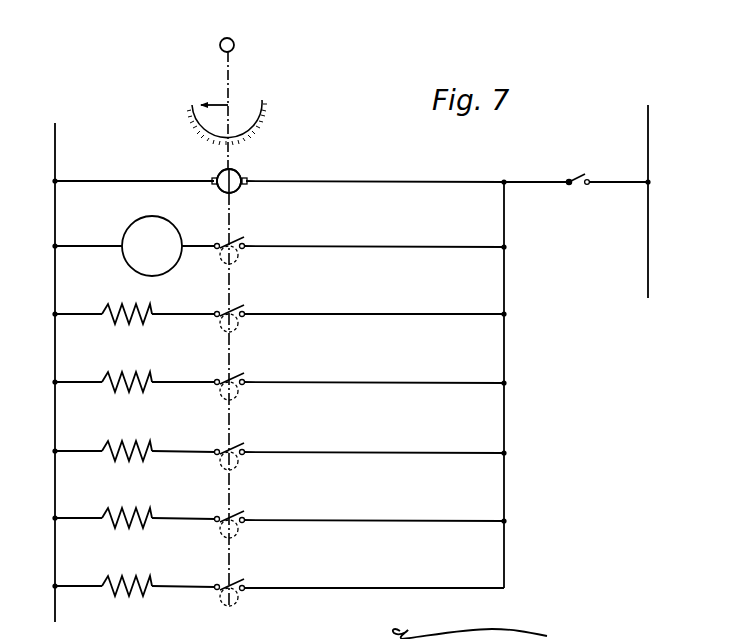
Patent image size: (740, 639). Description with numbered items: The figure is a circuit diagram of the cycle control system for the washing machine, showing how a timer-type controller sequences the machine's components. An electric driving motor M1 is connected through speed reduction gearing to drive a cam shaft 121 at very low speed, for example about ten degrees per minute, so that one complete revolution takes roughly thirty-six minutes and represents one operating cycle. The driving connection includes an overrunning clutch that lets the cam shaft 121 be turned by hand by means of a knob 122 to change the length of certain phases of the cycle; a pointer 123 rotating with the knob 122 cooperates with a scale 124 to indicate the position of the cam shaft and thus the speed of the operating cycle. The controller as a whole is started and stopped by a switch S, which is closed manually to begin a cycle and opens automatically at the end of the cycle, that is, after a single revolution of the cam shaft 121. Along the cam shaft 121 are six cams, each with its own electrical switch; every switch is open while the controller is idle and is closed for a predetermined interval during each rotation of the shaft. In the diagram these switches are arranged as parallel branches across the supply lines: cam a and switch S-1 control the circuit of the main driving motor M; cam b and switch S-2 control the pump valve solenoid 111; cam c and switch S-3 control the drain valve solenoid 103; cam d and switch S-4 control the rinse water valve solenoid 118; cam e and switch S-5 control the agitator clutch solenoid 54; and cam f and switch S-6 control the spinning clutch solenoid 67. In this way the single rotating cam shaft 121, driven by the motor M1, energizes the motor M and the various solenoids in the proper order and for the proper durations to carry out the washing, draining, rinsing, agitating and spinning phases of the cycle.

The knob 122 is at (233, 40).
The pointer 123 is at (218, 104).
The scale 124 is at (266, 121).
The cam shaft 121 is at (232, 168).
The electric driving motor M1 is at (216, 172).
The main driving motor M is at (140, 219).
The pump valve solenoid 111 is at (119, 298).
The drain valve solenoid 103 is at (129, 373).
The rinse water valve solenoid 118 is at (139, 443).
The agitator clutch solenoid 54 is at (129, 510).
The spinning clutch solenoid 67 is at (126, 573).
The switch S-1 is at (247, 239).
The switch S-2 is at (247, 307).
The switch S-3 is at (247, 375).
The switch S-4 is at (247, 444).
The switch S-5 is at (247, 512).
The switch S-6 is at (247, 580).
The cam a is at (240, 260).
The cam b is at (240, 329).
The cam c is at (240, 396).
The cam d is at (240, 466).
The cam e is at (240, 534).
The cam f is at (240, 602).
The switch S is at (582, 189).